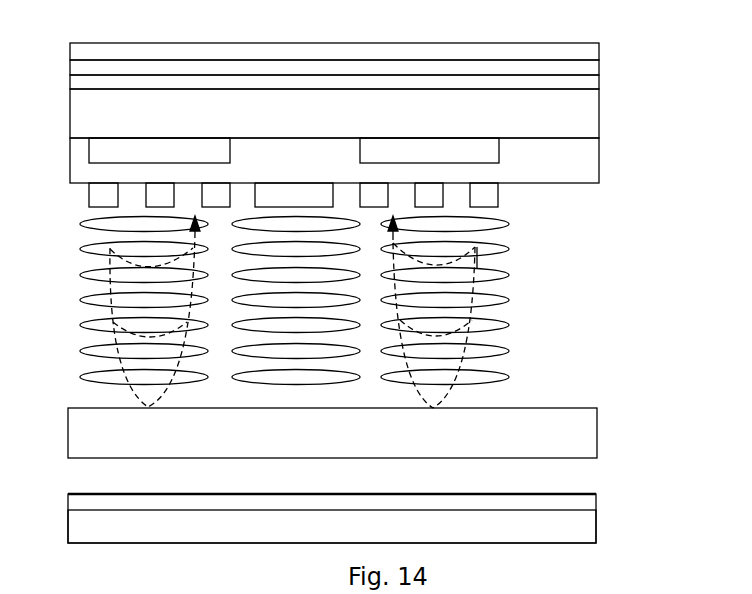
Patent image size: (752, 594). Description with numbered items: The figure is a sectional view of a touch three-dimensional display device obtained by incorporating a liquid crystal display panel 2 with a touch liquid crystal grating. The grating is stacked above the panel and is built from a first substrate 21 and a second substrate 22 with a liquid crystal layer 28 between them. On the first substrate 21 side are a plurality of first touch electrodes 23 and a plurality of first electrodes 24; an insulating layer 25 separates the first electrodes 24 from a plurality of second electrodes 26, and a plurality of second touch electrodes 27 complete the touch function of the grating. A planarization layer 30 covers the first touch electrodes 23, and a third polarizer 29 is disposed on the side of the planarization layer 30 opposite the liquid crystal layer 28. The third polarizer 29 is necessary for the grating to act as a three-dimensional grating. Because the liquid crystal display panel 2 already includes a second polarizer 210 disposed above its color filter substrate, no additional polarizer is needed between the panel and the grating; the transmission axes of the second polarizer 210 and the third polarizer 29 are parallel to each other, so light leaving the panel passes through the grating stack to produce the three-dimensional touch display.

The third polarizer 29 is at (588, 50).
The planarization layer 30 is at (593, 71).
The first touch electrodes 23 is at (593, 82).
The first substrate 21 is at (588, 114).
The insulating layer 25 is at (577, 167).
The first electrodes 24 is at (492, 153).
The second electrodes 26 is at (490, 200).
The second touch electrodes 27 is at (315, 203).
The liquid crystal layer 28 is at (493, 305).
The second substrate 22 is at (533, 423).
The liquid crystal display panel 2 is at (558, 494).
The second polarizer 210 is at (583, 503).